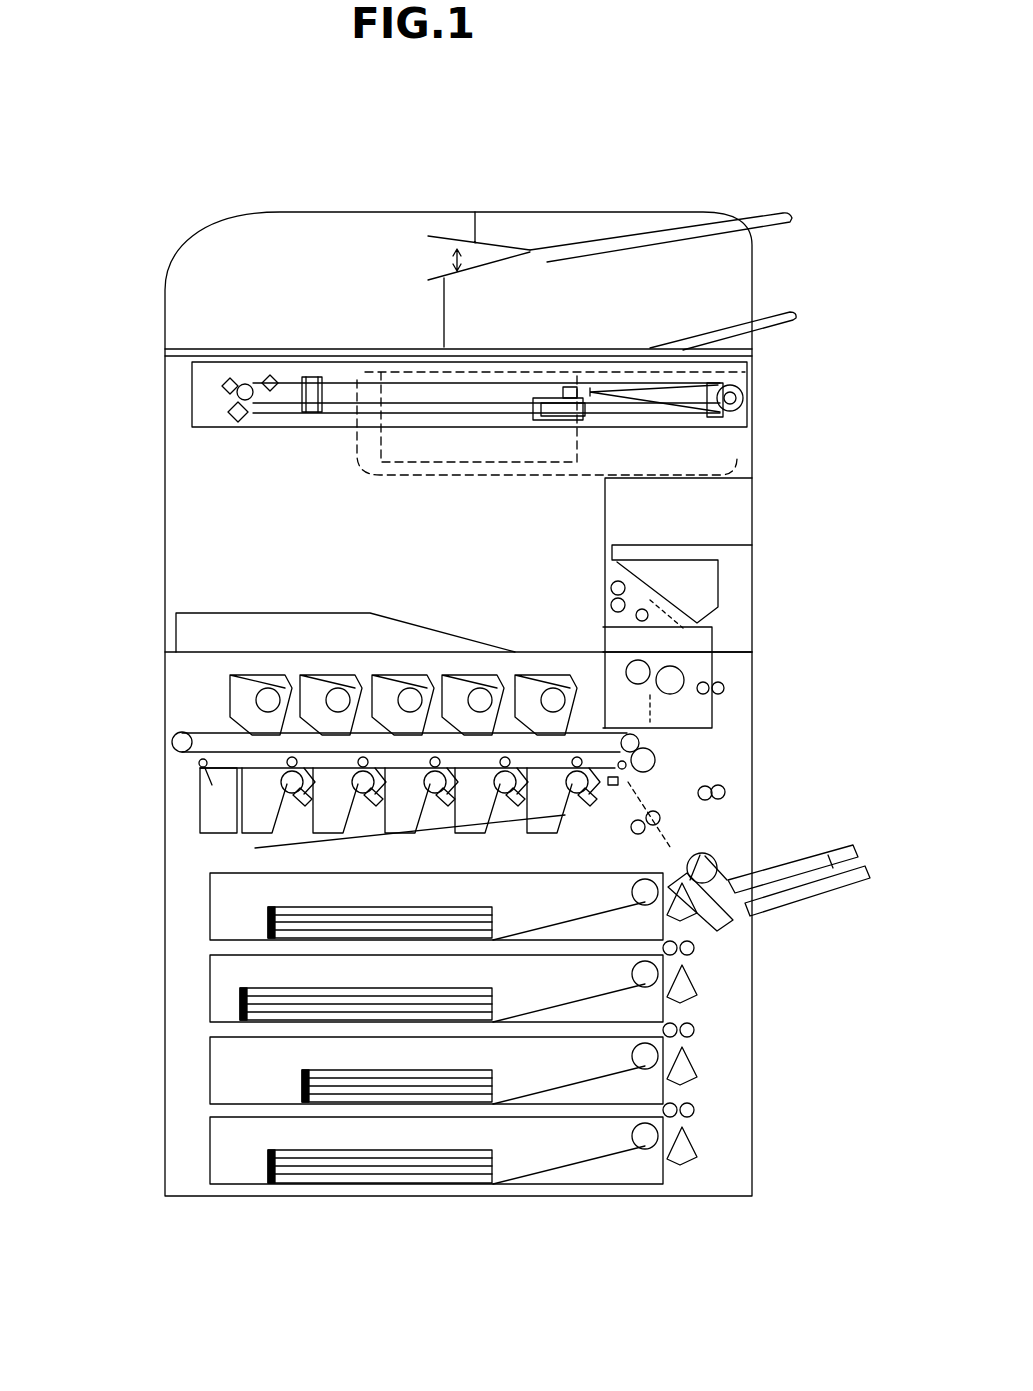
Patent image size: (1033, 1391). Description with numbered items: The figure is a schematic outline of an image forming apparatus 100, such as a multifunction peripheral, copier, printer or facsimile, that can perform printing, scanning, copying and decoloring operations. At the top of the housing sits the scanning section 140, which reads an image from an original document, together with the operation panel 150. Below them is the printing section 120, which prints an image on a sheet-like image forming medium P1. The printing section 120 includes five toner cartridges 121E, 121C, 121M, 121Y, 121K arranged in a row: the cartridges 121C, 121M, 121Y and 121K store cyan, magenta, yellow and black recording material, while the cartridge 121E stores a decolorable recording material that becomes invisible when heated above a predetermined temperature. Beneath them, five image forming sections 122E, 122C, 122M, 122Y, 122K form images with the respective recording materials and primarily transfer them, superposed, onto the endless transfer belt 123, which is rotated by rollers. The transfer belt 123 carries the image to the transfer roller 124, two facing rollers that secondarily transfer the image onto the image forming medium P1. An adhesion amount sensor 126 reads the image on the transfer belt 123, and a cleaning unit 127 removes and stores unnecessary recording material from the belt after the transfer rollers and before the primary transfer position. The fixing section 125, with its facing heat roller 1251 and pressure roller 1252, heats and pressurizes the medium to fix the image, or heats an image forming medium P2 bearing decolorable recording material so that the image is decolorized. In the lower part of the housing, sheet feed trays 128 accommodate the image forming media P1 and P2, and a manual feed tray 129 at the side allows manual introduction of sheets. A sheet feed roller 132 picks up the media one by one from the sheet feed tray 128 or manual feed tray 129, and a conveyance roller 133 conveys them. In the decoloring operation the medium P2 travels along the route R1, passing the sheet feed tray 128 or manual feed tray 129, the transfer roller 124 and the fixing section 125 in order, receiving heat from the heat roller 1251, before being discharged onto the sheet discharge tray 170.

The image forming apparatus 100 is at (703, 198).
The scanning section 140 is at (195, 376).
The operation panel 150 is at (737, 457).
The sheet discharge tray 170 is at (450, 637).
The fixing section 125 is at (718, 622).
The heat roller 1251 is at (626, 668).
The pressure roller 1252 is at (655, 668).
The route R1 is at (600, 598).
The toner cartridge 121E is at (235, 684).
The toner cartridge 121C is at (302, 692).
The toner cartridge 121M is at (374, 710).
The toner cartridge 121Y is at (445, 728).
The toner cartridge 121K is at (188, 744).
The cleaning unit 127 is at (215, 792).
The image forming section 122E is at (248, 800).
The image forming section 122C is at (315, 808).
The image forming section 122M is at (387, 816).
The image forming section 122Y is at (457, 828).
The image forming section 122K is at (565, 828).
The printing section 120 is at (668, 765).
The transfer belt 123 is at (643, 735).
The transfer roller 124 is at (658, 750).
The adhesion amount sensor 126 is at (724, 795).
The conveyance roller 133 is at (718, 855).
The sheet feed roller 132 is at (745, 915).
The manual feed tray 129 is at (792, 896).
The sheet feed tray 128 is at (690, 1165).
The image forming medium P2 is at (273, 930).
The image forming medium P1 is at (268, 1151).